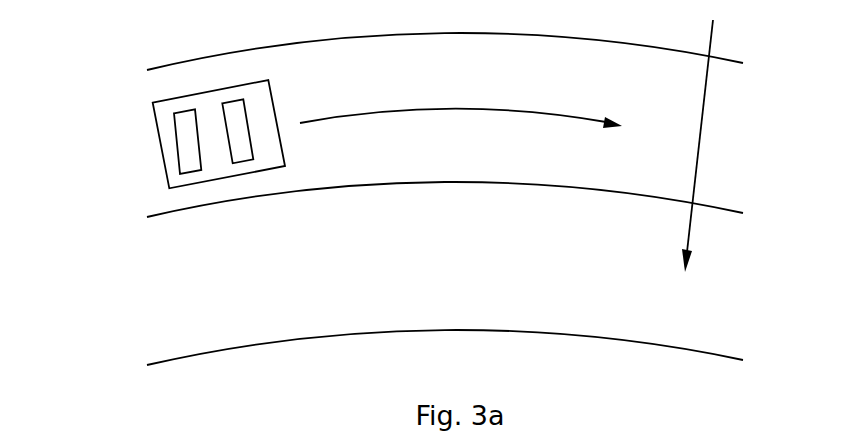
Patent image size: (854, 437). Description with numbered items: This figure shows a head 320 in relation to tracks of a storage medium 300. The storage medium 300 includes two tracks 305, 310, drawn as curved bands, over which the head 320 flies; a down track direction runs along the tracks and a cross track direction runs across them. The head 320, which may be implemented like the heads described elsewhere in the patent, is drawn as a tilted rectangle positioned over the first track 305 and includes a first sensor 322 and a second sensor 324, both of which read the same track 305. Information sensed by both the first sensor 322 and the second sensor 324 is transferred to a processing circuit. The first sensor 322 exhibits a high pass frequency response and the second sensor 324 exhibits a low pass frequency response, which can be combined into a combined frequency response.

The storage medium 300 is at (76, 60).
The track 305 is at (433, 156).
The track 310 is at (433, 268).
The head 320 is at (162, 150).
The first sensor 322 is at (184, 112).
The second sensor 324 is at (228, 101).